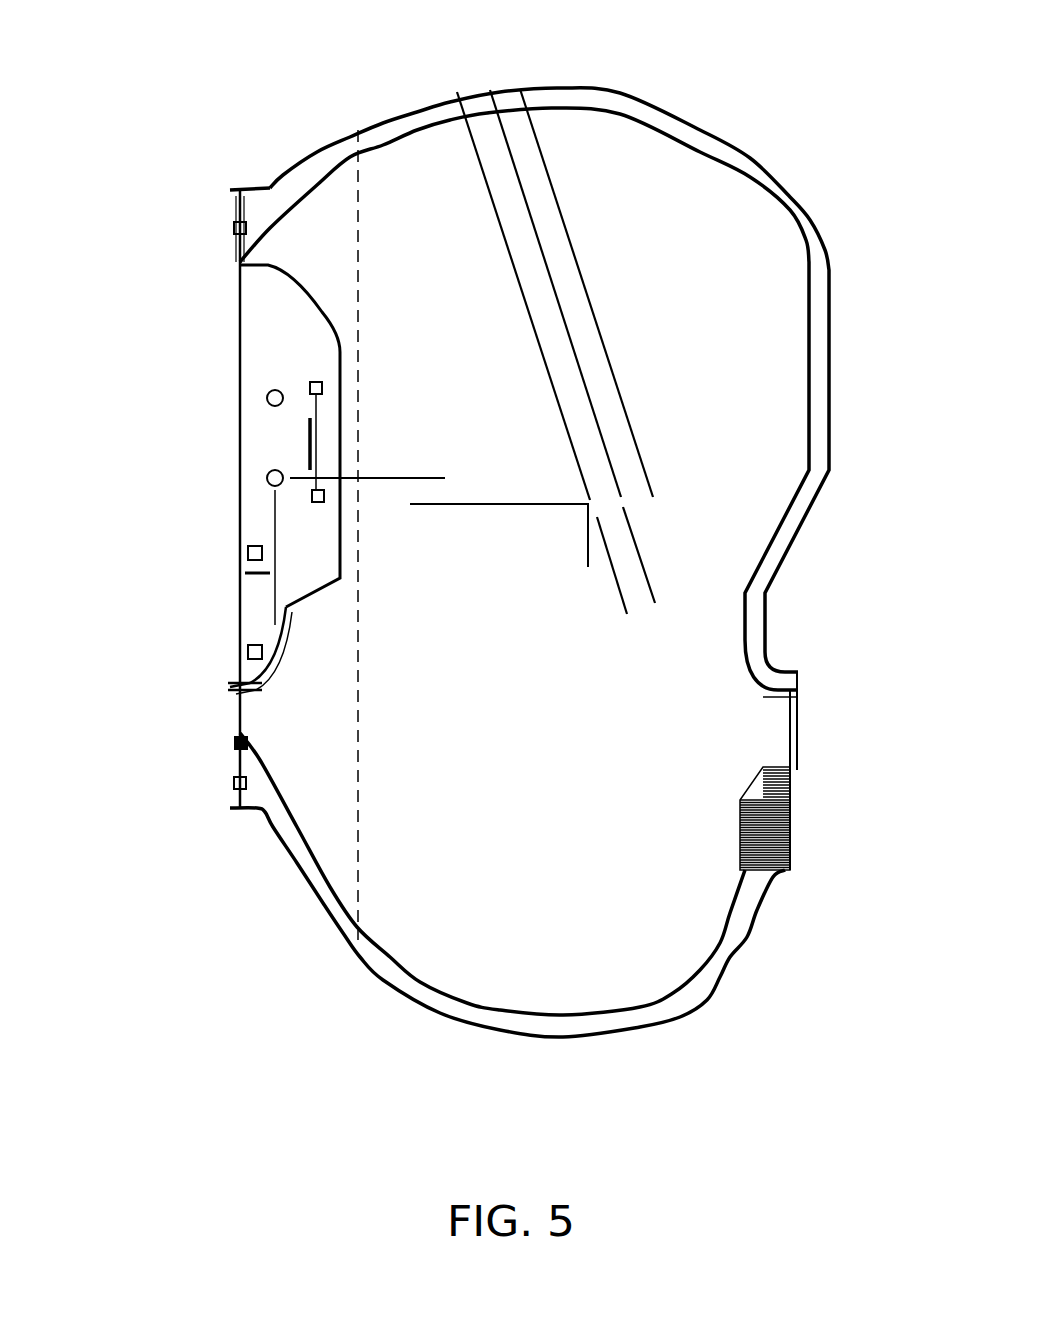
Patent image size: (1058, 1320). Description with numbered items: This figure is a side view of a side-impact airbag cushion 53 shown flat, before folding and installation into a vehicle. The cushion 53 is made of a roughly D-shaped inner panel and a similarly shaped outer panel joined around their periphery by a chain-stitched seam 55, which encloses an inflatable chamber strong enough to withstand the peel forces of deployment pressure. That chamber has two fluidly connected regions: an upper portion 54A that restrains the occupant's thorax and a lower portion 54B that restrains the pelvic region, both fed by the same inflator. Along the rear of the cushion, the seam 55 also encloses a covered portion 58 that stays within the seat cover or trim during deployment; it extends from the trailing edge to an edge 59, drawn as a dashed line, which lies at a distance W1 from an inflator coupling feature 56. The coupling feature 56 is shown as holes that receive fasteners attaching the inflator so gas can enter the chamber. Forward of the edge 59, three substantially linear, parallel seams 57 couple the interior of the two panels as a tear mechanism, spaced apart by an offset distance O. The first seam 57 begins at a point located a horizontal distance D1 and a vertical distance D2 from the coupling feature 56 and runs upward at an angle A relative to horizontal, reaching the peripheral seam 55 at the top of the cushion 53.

The side-impact airbag cushion 53 is at (207, 287).
The upper portion 54A is at (642, 266).
The lower portion 54B is at (536, 873).
The seam 55 is at (621, 115).
The inflator coupling feature 56 is at (266, 402).
The linear seam 57 is at (500, 137).
The covered portion 58 is at (290, 708).
The edge 59 is at (358, 733).
The horizontal distance D1 is at (275, 561).
The vertical distance D2 is at (433, 542).
The distance W1 is at (358, 612).
The angle A is at (570, 445).
The offset distance O is at (700, 560).